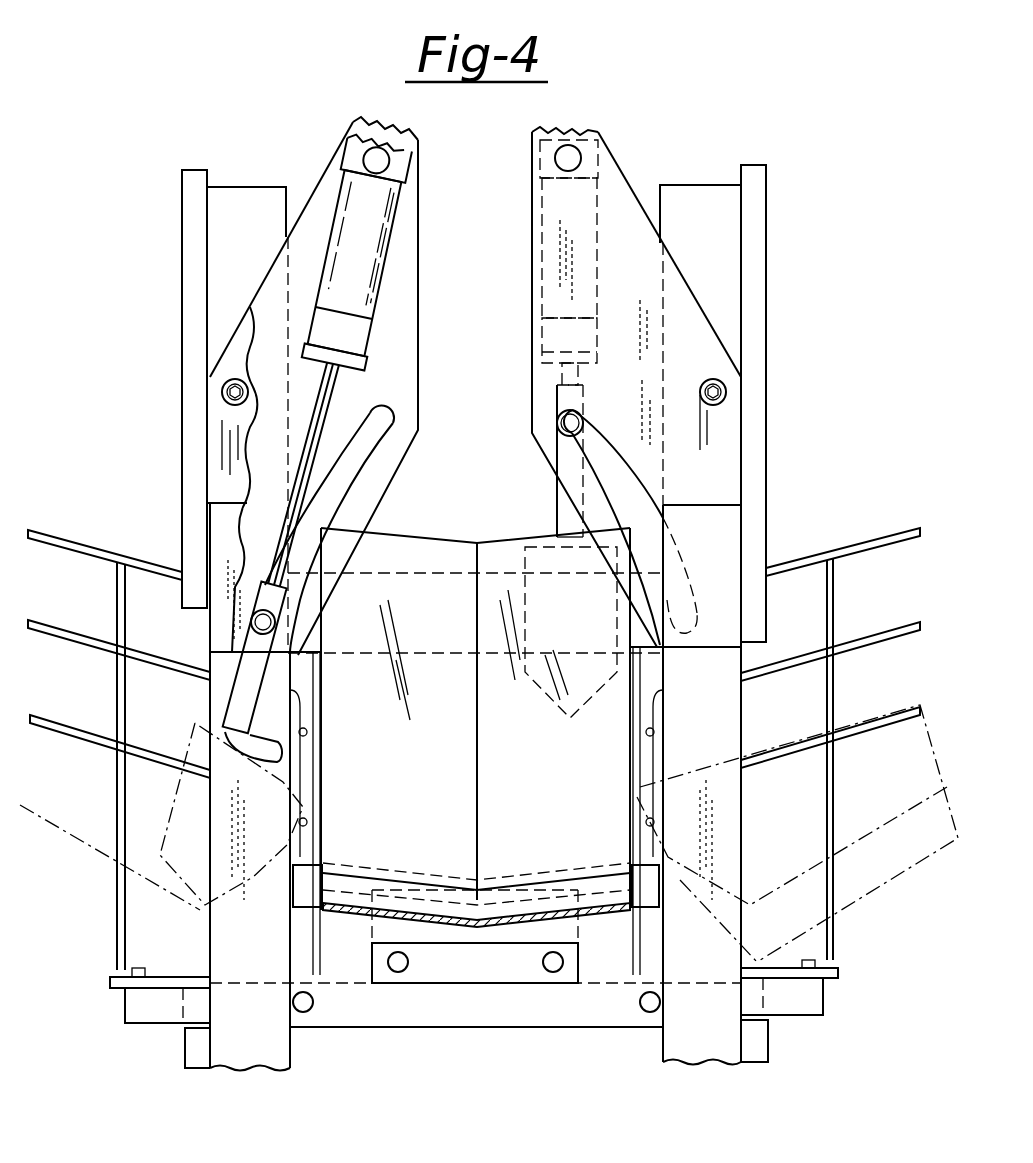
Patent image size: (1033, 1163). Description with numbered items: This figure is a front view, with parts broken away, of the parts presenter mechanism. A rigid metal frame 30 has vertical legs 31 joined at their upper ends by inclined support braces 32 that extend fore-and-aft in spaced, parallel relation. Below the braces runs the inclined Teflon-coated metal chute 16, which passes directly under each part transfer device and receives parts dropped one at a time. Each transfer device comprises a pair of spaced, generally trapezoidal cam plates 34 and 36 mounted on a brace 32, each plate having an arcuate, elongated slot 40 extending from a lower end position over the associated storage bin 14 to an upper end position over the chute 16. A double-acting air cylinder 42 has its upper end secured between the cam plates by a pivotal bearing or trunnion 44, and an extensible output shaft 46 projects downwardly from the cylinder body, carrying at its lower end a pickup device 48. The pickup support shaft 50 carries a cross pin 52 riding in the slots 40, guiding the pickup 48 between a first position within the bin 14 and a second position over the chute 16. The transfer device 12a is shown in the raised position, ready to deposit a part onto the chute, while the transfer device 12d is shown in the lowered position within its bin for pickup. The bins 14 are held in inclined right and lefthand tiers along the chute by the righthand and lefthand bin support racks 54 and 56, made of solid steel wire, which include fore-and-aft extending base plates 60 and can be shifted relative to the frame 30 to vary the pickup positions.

The transfer device 12a is at (652, 210).
The transfer device 12d is at (334, 160).
The storage bin 14 is at (932, 718).
The chute 16 is at (457, 778).
The frame 30 is at (210, 1045).
The vertical leg 31 is at (258, 247).
The support brace 32 is at (183, 270).
The cam plate 34 is at (618, 195).
The cam plate 36 is at (403, 290).
The arcuate slot 40 is at (372, 440).
The air cylinder 42 is at (540, 222).
The trunnion 44 is at (578, 152).
The output shaft 46 is at (548, 380).
The pickup device 48 is at (563, 720).
The pickup support shaft 50 is at (557, 510).
The cross pin 52 is at (558, 420).
The righthand bin support rack 54 is at (882, 500).
The lefthand bin support rack 56 is at (58, 530).
The base plate 60 is at (450, 1017).